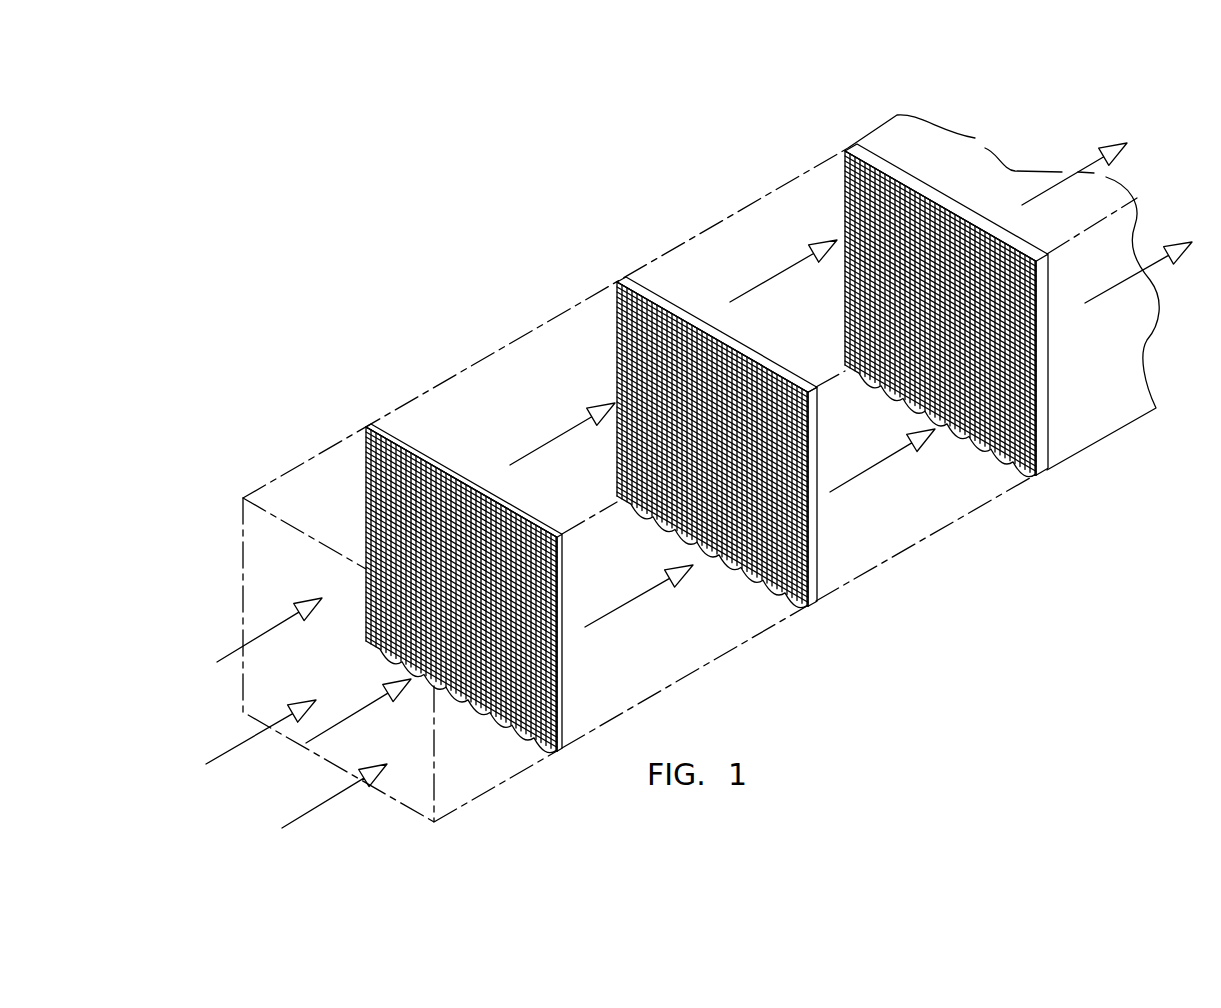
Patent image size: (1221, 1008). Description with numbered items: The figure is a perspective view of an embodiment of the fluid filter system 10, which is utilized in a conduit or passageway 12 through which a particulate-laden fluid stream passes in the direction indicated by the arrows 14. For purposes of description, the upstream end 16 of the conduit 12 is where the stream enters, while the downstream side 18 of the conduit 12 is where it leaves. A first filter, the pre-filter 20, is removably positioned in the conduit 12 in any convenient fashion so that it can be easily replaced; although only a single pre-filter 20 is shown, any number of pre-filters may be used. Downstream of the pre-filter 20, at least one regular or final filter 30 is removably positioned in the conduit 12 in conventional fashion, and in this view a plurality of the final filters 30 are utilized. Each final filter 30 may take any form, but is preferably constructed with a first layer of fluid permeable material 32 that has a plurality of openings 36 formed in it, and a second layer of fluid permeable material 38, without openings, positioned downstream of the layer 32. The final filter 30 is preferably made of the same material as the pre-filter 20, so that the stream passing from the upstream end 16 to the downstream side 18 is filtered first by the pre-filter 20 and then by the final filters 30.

The fluid filter system 10 is at (507, 258).
The conduit 12 is at (480, 360).
The arrows 14 is at (275, 623).
The upstream end 16 is at (192, 543).
The downstream side 18 is at (1023, 101).
The pre-filter 20 is at (455, 462).
The final filter 30 is at (832, 404).
The first layer of fluid permeable material 32 is at (780, 595).
The openings 36 is at (740, 563).
The second layer of fluid permeable material 38 is at (735, 340).